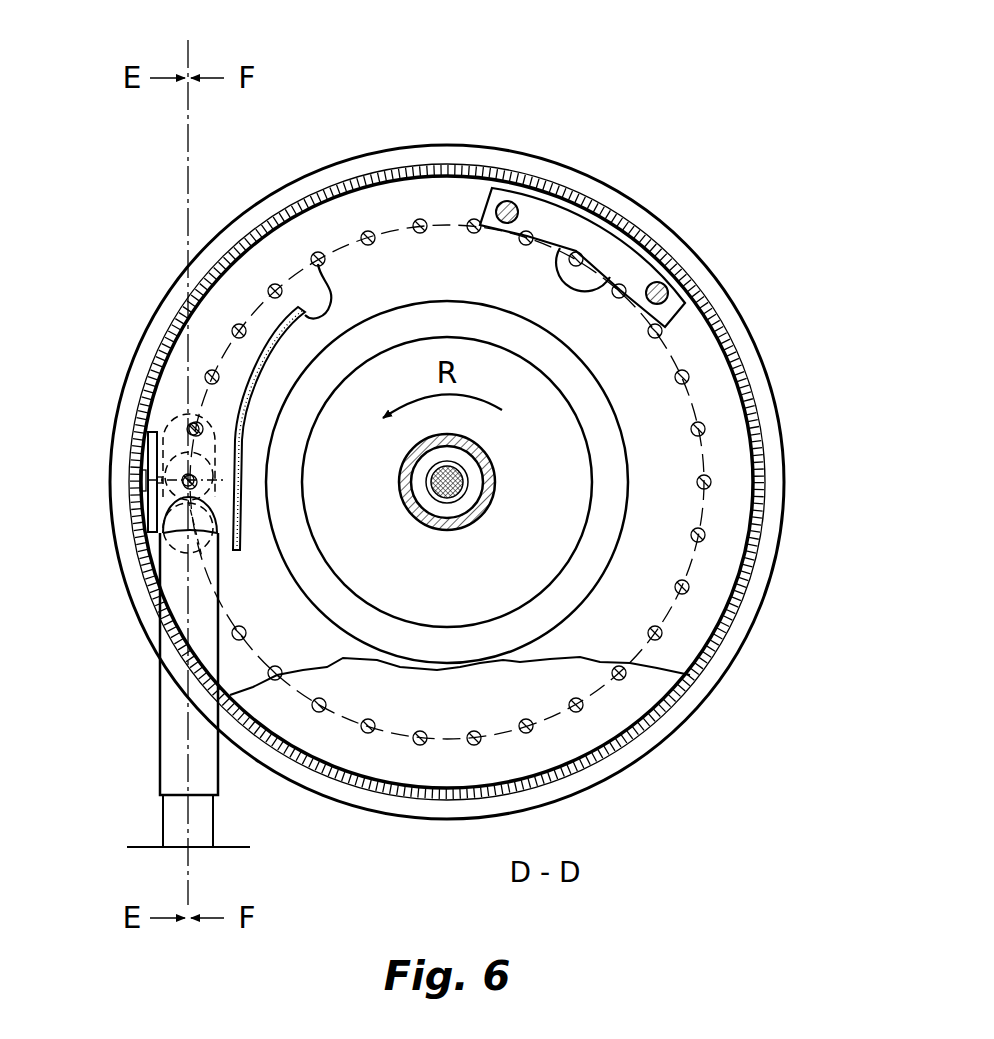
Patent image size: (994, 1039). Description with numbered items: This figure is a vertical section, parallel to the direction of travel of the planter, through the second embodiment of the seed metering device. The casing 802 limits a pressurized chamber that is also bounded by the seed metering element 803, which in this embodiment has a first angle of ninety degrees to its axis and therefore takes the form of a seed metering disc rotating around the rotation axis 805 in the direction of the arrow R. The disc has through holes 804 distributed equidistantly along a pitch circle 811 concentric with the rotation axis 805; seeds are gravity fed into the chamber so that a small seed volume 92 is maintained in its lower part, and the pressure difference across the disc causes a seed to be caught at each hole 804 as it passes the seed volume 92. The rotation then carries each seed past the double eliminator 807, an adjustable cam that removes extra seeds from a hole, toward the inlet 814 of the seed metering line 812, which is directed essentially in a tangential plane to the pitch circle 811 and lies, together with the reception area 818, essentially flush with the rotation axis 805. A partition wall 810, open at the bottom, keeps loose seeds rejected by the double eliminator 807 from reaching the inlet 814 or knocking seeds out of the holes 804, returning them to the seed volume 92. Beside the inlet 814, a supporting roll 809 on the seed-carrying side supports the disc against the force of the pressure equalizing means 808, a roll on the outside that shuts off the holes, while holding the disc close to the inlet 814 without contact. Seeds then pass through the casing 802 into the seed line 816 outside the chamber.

The seed volume 92 is at (610, 660).
The casing 802 is at (690, 240).
The seed metering element 803 is at (647, 498).
The through holes 804 is at (378, 228).
The rotation axis 805 is at (452, 477).
The double eliminator 807 is at (613, 292).
The pressure equalizing means 808 is at (165, 460).
The supporting roll 809 is at (140, 480).
The partition wall 810 is at (308, 300).
The pitch circle 811 is at (453, 223).
The seed metering line 812 is at (132, 741).
The inlet 814 is at (160, 547).
The seed line 816 is at (215, 808).
The reception area 818 is at (150, 430).